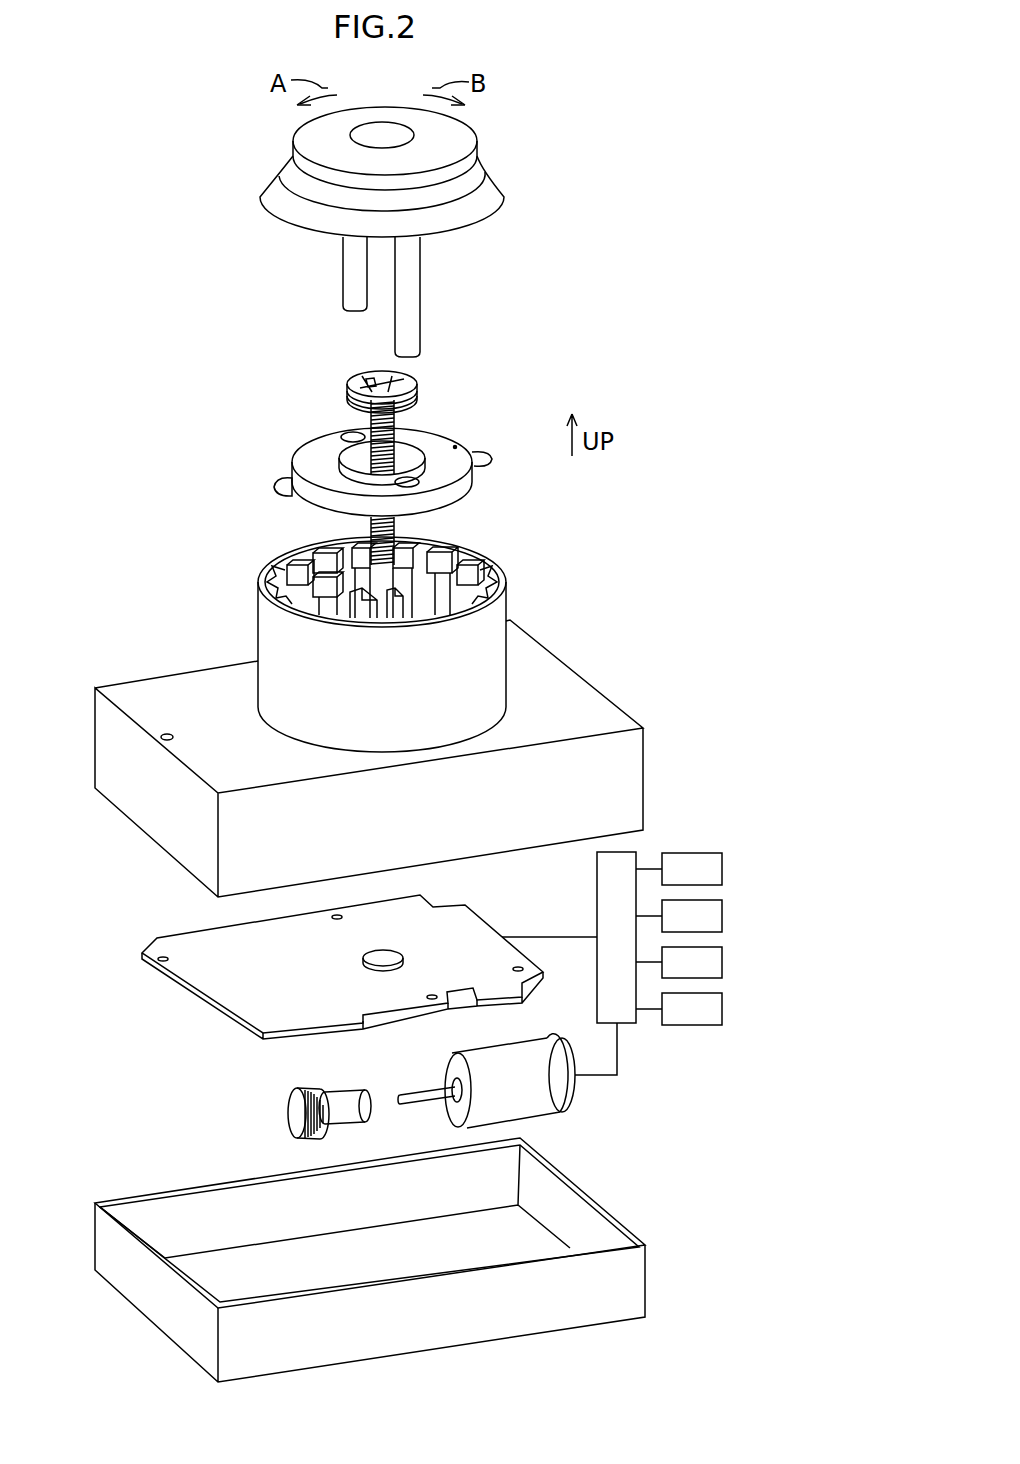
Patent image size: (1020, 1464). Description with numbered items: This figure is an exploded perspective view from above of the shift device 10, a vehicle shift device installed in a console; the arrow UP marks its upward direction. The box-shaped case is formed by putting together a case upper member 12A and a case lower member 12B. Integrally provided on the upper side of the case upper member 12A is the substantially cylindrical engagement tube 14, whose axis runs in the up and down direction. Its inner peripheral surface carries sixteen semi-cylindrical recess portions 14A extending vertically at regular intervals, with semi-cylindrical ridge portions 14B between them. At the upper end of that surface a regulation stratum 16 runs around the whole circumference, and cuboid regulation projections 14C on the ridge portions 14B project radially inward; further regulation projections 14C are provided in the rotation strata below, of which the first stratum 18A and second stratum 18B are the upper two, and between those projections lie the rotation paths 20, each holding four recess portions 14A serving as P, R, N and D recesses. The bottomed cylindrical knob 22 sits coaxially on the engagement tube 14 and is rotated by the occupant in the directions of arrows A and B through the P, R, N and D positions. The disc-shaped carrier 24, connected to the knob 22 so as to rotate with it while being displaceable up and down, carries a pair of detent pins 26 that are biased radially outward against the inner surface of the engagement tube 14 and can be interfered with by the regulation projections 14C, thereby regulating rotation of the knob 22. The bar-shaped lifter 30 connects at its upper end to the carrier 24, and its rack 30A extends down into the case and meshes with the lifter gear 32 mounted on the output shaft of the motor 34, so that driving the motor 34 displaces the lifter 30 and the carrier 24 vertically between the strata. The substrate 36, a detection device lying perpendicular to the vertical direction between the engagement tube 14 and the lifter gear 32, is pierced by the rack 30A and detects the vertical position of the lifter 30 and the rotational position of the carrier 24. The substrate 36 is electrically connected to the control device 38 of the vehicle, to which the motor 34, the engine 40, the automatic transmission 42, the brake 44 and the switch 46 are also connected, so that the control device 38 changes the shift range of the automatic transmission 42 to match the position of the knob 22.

The shift device 10 is at (137, 288).
The case upper member 12A is at (150, 682).
The case lower member 12B is at (146, 1198).
The engagement tube 14 is at (258, 628).
The recess portions 14A is at (347, 533).
The ridge portions 14B is at (443, 553).
The regulation projections 14C is at (443, 578).
The regulation stratum 16 is at (310, 538).
The first stratum 18A is at (458, 567).
The second stratum 18B is at (320, 607).
The rotation paths 20 is at (303, 603).
The knob 22 is at (290, 138).
The carrier 24 is at (312, 432).
The detent pins 26 is at (285, 482).
The lifter 30 is at (413, 385).
The rack 30A is at (396, 444).
The lifter gear 32 is at (291, 1104).
The motor 34 is at (547, 1115).
The substrate 36 is at (158, 972).
The control device 38 is at (597, 876).
The engine 40 is at (722, 866).
The automatic transmission 42 is at (722, 913).
The brake 44 is at (722, 959).
The switch 46 is at (722, 1006).